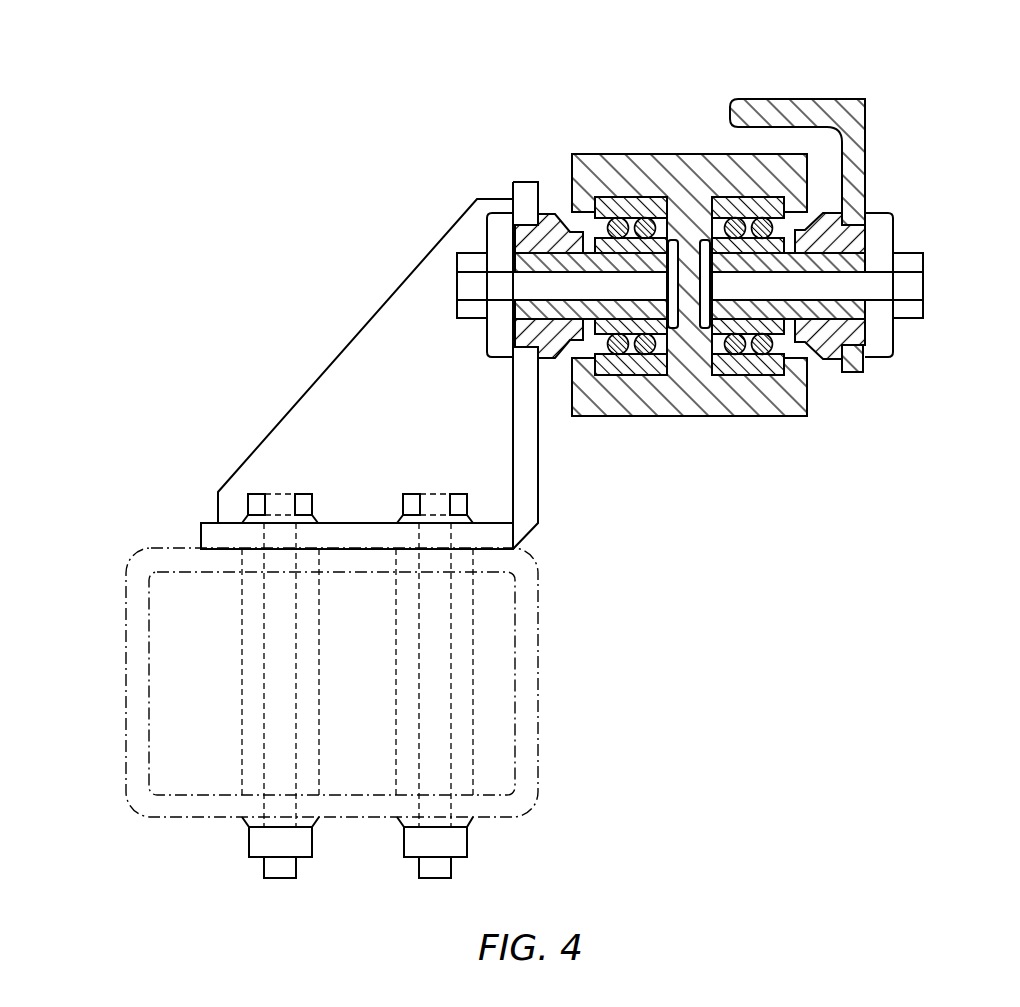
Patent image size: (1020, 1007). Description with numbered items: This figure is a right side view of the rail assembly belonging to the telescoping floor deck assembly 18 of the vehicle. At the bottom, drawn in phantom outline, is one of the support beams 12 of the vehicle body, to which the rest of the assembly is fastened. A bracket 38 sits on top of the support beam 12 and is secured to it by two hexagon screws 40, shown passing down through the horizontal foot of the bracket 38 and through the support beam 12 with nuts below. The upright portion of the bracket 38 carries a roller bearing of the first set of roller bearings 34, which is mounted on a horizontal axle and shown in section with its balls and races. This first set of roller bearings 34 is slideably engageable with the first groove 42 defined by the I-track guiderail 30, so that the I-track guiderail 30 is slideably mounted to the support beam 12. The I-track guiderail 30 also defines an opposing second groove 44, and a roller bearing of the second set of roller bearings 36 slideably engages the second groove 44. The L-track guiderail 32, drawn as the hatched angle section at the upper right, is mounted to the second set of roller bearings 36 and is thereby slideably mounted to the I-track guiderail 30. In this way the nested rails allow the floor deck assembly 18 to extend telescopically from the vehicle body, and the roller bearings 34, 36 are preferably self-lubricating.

The support beam 12 is at (126, 693).
The floor deck assembly 18 is at (327, 196).
The I-track guiderail 30 is at (647, 153).
The L-track guiderail 32 is at (816, 103).
The first set of roller bearings 34 is at (634, 353).
The second set of roller bearings 36 is at (763, 368).
The bracket 38 is at (539, 468).
The hexagon screws 40 is at (442, 682).
The first groove 42 is at (583, 228).
The second groove 44 is at (795, 224).